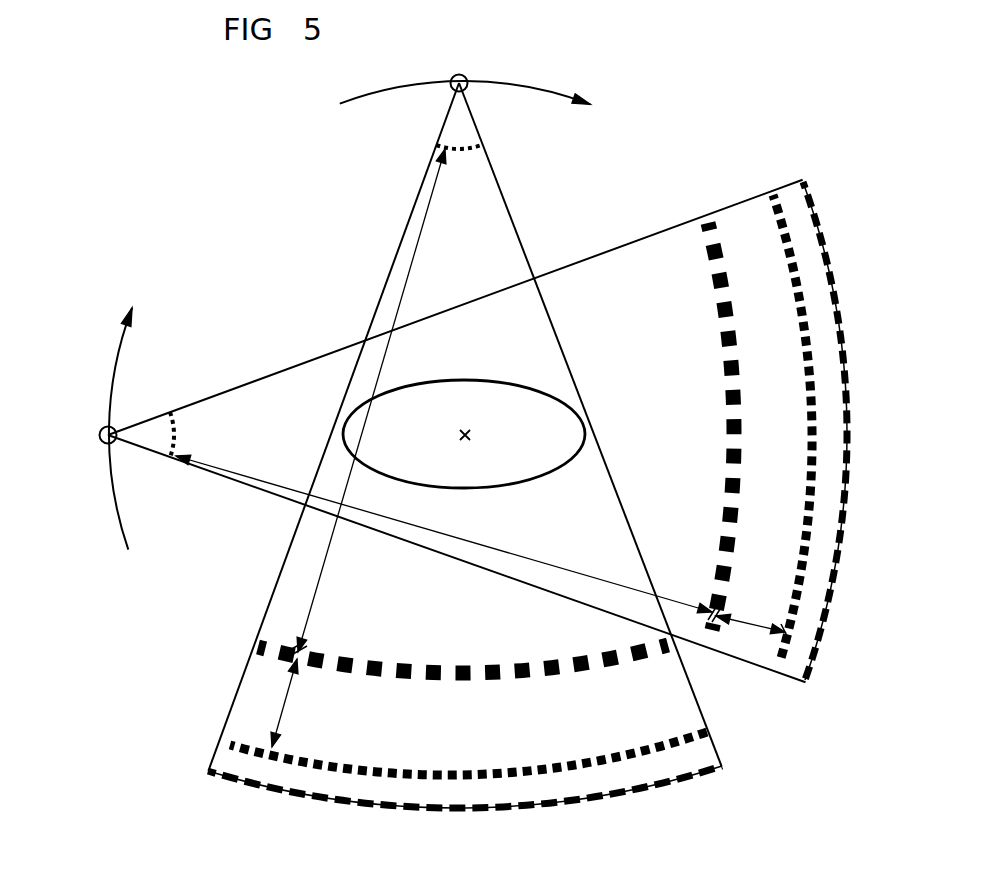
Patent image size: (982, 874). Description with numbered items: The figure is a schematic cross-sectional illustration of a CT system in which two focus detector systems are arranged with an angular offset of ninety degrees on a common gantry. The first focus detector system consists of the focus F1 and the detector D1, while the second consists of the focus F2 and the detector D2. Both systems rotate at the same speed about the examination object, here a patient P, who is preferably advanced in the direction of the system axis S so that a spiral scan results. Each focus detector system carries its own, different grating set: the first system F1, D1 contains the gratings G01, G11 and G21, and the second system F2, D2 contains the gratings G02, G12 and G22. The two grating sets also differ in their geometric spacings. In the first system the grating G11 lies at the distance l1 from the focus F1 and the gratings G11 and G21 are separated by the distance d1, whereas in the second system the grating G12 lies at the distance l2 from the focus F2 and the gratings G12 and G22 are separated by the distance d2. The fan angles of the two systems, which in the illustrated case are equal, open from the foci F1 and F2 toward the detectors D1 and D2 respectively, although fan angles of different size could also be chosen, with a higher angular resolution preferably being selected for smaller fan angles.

The focus of first focus detector system F1 is at (99, 434).
The focus of second focus detector system F2 is at (460, 74).
The first grating of first grating set G01 is at (172, 412).
The first grating of second grating set G02 is at (440, 148).
The second grating of first grating set G11 is at (708, 215).
The third grating of first grating set G21 is at (773, 190).
The second grating of second grating set G12 is at (282, 660).
The third grating of second grating set G22 is at (228, 745).
The detector of first focus detector system D1 is at (806, 184).
The detector of second focus detector system D2 is at (212, 780).
The patient P is at (475, 381).
The system axis S is at (469, 437).
The distance l1 is at (539, 560).
The distance l2 is at (418, 242).
The distance d1 is at (748, 622).
The distance d2 is at (286, 718).